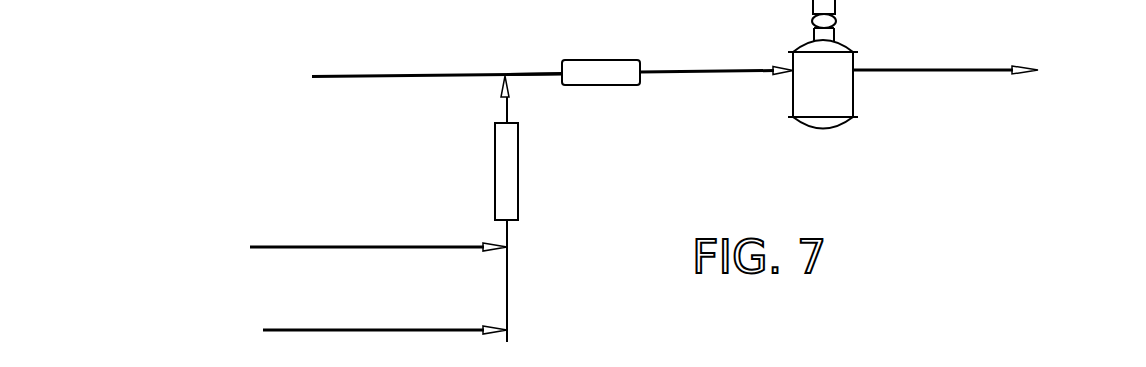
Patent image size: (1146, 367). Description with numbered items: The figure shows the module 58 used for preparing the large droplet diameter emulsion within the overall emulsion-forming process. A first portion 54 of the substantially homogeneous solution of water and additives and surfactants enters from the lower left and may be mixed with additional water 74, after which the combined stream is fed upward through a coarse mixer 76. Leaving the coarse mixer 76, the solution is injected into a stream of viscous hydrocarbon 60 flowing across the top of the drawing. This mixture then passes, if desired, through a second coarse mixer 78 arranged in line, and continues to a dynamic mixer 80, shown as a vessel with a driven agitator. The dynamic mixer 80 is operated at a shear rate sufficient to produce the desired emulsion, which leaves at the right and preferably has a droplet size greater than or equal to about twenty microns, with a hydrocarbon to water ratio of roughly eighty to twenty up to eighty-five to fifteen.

The first portion 54 is at (368, 332).
The module 58 is at (300, 124).
The viscous hydrocarbon 60 is at (457, 75).
The additional water 74 is at (385, 247).
The coarse mixer 76 is at (495, 168).
The coarse mixer 78 is at (612, 86).
The dynamic mixer 80 is at (845, 63).